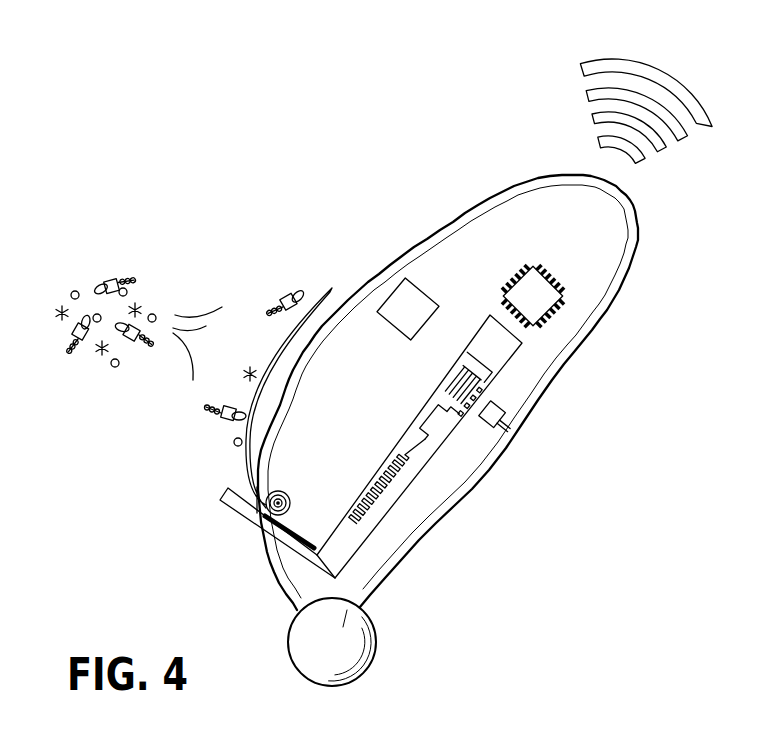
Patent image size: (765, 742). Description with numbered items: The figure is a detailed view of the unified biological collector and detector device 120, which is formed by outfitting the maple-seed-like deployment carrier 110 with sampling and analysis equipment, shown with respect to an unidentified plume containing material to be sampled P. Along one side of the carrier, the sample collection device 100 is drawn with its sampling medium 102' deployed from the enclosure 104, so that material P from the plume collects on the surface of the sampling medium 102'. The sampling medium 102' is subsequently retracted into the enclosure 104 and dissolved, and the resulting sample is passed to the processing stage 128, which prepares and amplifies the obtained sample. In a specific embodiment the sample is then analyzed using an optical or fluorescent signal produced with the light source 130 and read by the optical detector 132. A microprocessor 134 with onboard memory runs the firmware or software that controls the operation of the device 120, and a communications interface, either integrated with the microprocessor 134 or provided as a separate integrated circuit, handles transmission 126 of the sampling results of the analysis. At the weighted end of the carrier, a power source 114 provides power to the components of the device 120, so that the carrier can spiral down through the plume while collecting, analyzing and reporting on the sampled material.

The unified biological collector and detector device 120 is at (245, 170).
The transmission 126 is at (604, 60).
The microprocessor 134 is at (523, 263).
The optical detector 132 is at (410, 276).
The sampling medium 102' is at (289, 371).
The material to be sampled P is at (80, 282).
The light source 130 is at (497, 406).
The processing stage 128 is at (440, 433).
The deployment carrier 110 is at (442, 495).
The sample collection device 100 is at (230, 481).
The enclosure 104 is at (266, 508).
The power source 114 is at (306, 638).